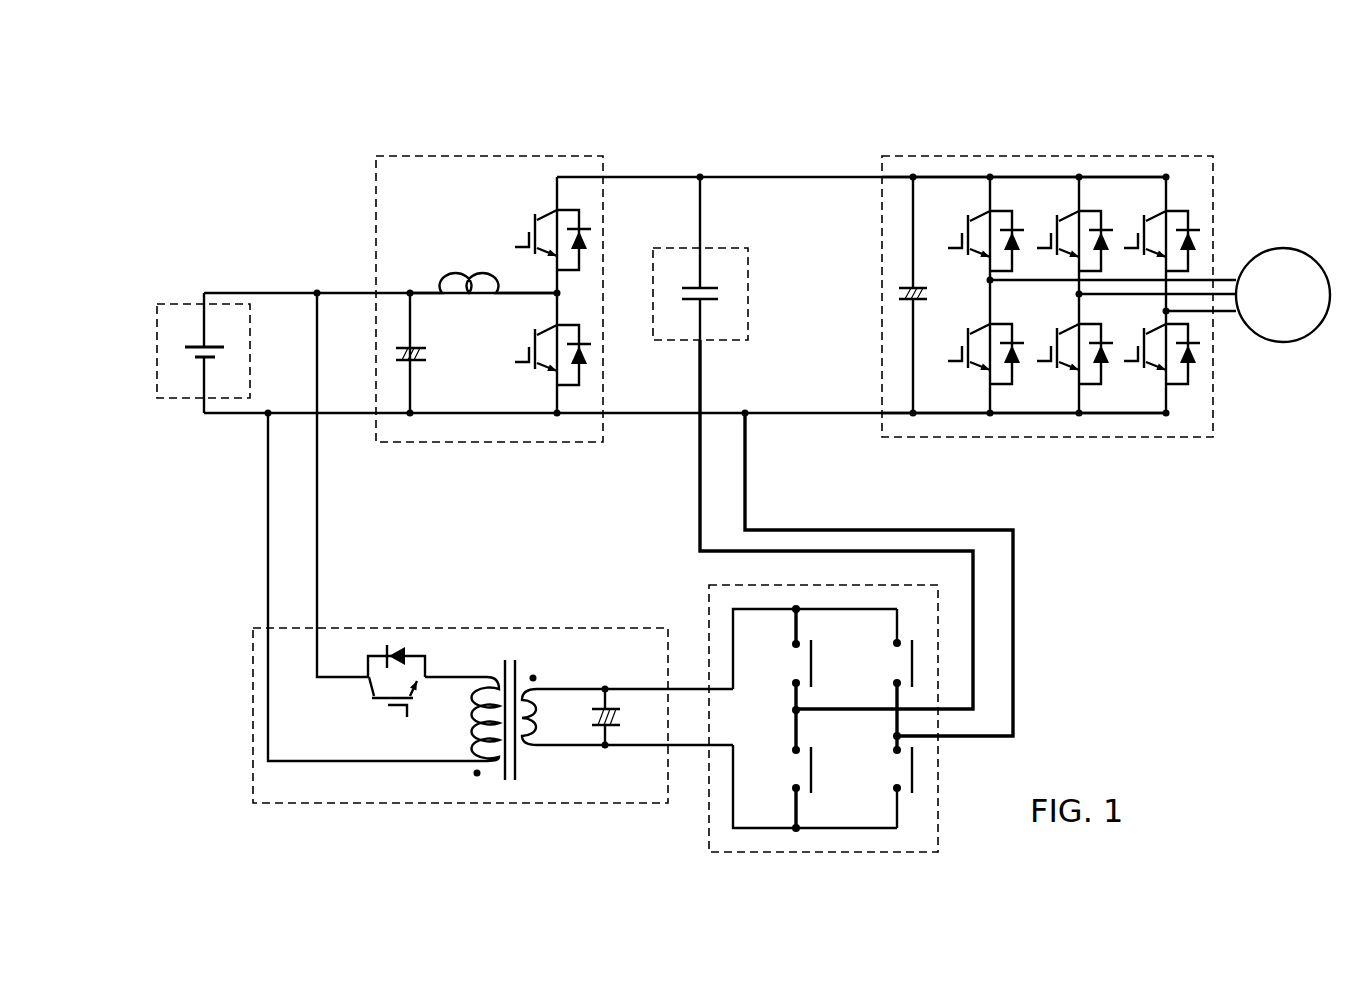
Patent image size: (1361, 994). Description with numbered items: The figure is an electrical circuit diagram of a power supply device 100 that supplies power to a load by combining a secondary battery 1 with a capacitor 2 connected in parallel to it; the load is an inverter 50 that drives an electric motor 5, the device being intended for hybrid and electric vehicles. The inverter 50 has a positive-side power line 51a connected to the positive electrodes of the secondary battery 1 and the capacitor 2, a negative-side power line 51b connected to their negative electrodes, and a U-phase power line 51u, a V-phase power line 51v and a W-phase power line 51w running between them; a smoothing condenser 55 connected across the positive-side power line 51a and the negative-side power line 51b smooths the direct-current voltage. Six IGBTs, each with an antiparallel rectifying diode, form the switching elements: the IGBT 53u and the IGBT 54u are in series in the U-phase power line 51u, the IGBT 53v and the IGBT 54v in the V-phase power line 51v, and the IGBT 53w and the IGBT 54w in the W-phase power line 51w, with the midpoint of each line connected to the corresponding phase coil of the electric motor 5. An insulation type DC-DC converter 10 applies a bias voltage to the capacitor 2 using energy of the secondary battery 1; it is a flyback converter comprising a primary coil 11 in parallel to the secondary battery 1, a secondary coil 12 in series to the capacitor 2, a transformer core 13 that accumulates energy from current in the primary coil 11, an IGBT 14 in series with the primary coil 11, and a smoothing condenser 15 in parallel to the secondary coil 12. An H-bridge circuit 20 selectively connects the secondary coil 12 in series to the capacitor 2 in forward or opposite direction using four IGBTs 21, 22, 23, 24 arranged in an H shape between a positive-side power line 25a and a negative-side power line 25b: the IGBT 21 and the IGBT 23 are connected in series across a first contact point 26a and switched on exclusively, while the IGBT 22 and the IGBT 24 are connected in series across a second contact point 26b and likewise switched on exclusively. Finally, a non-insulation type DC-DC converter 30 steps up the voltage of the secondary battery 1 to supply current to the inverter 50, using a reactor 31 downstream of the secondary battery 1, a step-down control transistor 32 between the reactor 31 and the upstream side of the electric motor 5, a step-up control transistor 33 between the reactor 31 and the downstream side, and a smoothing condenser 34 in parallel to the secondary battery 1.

The secondary battery 1 is at (182, 303).
The capacitor 2 is at (748, 270).
The electric motor 5 is at (1278, 248).
The insulation type DC-DC converter 10 is at (318, 805).
The primary coil 11 is at (470, 675).
The secondary coil 12 is at (553, 686).
The transformer core 13 is at (527, 765).
The IGBT 14 is at (376, 684).
The smoothing condenser 15 is at (612, 706).
The H-bridge circuit 20 is at (884, 853).
The IGBT 21 is at (815, 662).
The IGBT 22 is at (916, 664).
The IGBT 23 is at (815, 773).
The IGBT 24 is at (916, 773).
The positive-side power line 25a is at (758, 612).
The negative-side power line 25b is at (758, 826).
The first contact point 26a is at (794, 712).
The second contact point 26b is at (895, 738).
The non-insulation type DC-DC converter 30 is at (557, 155).
The reactor 31 is at (470, 285).
The step-down control transistor 32 is at (546, 214).
The step-up control transistor 33 is at (541, 368).
The smoothing condenser 34 is at (405, 345).
The inverter 50 is at (1200, 155).
The positive-side power line 51a is at (935, 176).
The negative-side power line 51b is at (950, 415).
The U-phase power line 51u is at (990, 190).
The V-phase power line 51v is at (1079, 190).
The W-phase power line 51w is at (1166, 190).
The IGBT 53u is at (980, 258).
The IGBT 53v is at (1068, 258).
The IGBT 53w is at (1156, 258).
The IGBT 54u is at (978, 371).
The IGBT 54v is at (1067, 371).
The IGBT 54w is at (1154, 371).
The smoothing condenser 55 is at (906, 305).
The power supply device 100 is at (800, 122).